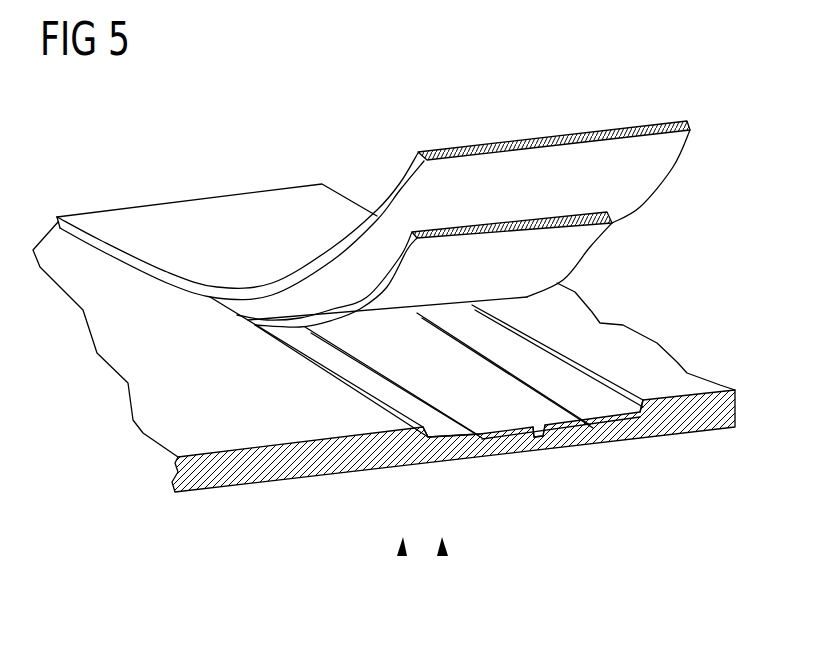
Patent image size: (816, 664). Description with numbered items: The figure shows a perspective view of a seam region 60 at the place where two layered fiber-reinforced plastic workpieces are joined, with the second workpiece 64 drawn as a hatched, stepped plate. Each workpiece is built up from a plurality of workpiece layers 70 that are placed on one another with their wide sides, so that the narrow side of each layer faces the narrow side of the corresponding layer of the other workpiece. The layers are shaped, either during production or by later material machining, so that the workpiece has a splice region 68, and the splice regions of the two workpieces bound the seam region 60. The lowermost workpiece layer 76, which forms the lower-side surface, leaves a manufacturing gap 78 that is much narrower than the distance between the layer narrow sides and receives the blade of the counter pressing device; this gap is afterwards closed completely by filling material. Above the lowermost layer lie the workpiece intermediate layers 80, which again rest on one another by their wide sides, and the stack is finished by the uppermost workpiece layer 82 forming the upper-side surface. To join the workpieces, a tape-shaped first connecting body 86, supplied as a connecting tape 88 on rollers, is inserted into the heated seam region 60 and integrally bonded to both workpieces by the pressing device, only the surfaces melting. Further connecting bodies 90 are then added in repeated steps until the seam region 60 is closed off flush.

The seam region 60 is at (172, 177).
The second workpiece 64 is at (230, 470).
The splice region 68 is at (398, 400).
The workpiece layers 70 is at (405, 433).
The lowermost workpiece layer 76 is at (512, 440).
The manufacturing gap 78 is at (537, 445).
The workpiece intermediate layers 80 is at (444, 548).
The uppermost workpiece layer 82 is at (401, 548).
The first connecting body 86 is at (490, 378).
The connecting tape 88 is at (567, 237).
The further connecting bodies 90 is at (512, 217).